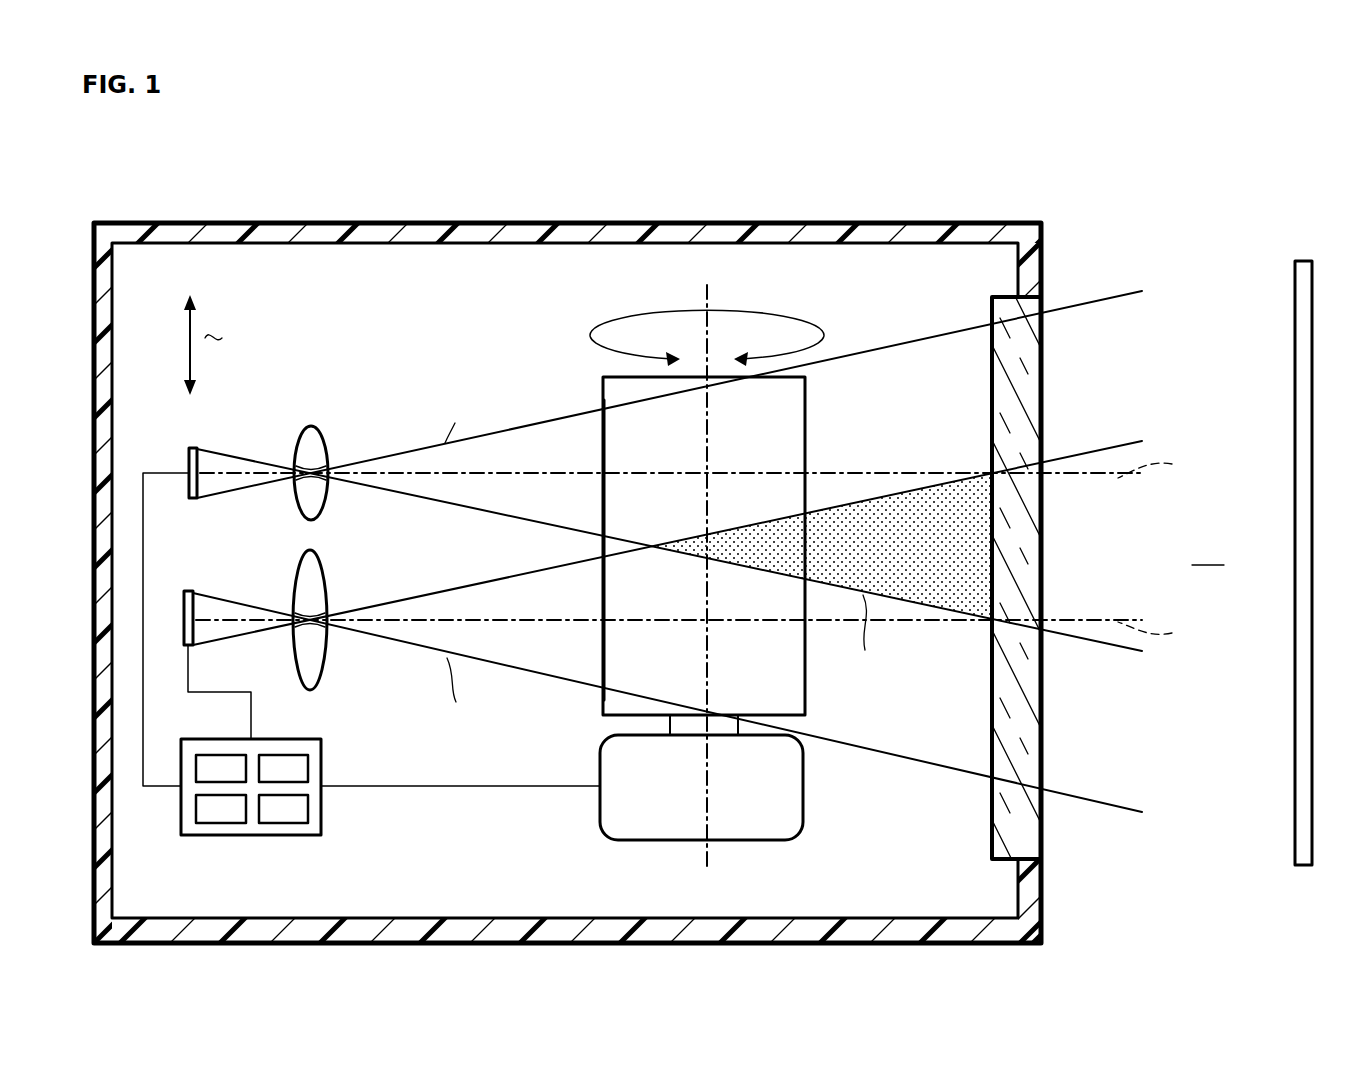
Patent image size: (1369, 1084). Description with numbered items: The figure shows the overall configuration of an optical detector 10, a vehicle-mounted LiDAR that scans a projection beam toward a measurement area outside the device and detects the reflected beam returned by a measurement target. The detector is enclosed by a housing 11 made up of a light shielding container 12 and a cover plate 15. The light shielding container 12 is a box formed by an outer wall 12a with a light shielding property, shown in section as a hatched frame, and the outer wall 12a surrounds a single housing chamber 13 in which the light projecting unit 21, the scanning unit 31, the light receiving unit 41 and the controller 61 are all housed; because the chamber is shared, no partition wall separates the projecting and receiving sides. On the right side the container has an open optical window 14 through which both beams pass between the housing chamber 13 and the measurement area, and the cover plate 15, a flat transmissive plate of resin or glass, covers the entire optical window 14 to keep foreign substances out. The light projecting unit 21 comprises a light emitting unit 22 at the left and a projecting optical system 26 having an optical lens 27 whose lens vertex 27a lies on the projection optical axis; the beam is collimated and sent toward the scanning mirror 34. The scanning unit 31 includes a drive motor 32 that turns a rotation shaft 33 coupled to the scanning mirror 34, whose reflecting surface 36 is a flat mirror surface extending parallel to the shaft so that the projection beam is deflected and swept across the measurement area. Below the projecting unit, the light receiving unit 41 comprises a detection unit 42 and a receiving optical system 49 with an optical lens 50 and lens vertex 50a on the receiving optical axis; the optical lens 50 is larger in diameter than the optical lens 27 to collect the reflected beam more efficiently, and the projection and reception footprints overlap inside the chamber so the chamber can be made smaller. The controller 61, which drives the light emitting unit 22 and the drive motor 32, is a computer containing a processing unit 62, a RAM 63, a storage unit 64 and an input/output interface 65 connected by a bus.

The optical detector 10 is at (138, 182).
The housing 11 is at (1078, 173).
The light shielding container 12 is at (982, 223).
The outer wall 12a is at (534, 223).
The housing chamber 13 is at (446, 302).
The optical window 14 is at (1027, 858).
The cover plate 15 is at (1043, 310).
The light projecting unit 21 is at (372, 380).
The light emitting unit 22 is at (190, 448).
The projecting optical system 26 is at (300, 430).
The optical lens 27 is at (314, 461).
The lens vertex 27a is at (330, 483).
The scanning unit 31 is at (797, 302).
The drive motor 32 is at (600, 814).
The rotation shaft 33 is at (670, 723).
The scanning mirror 34 is at (617, 377).
The reflecting surface 36 is at (626, 426).
The light receiving unit 41 is at (387, 560).
The detection unit 42 is at (189, 591).
The receiving optical system 49 is at (327, 646).
The optical lens 50 is at (334, 623).
The lens vertex 50a is at (330, 615).
The controller 61 is at (180, 813).
The processing unit 62 is at (213, 755).
The RAM 63 is at (279, 755).
The storage unit 64 is at (220, 824).
The input/output interface 65 is at (286, 824).